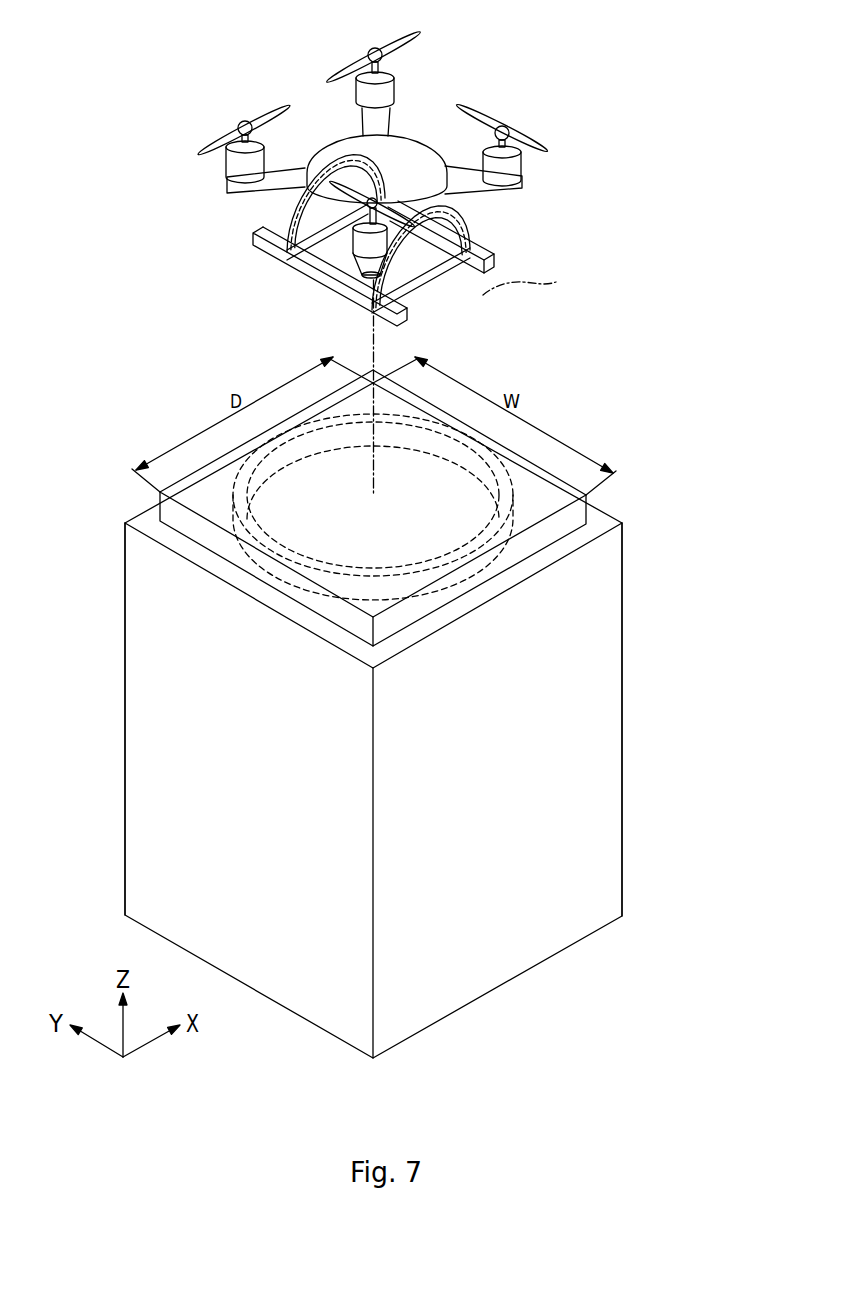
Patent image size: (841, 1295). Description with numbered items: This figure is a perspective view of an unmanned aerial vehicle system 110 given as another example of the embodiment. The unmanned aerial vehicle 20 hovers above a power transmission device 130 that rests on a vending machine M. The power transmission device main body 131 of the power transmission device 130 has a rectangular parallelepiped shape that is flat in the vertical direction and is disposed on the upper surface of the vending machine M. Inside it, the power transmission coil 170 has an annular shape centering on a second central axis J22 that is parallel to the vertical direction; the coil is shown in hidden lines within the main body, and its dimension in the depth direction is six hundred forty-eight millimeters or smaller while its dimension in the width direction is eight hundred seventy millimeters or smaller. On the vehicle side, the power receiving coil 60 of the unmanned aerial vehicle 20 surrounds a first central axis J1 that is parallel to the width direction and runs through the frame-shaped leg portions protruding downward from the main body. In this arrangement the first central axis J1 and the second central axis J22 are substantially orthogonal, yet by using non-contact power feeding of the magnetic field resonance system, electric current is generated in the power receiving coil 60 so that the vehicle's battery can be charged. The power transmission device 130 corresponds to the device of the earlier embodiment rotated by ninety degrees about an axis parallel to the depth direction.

The unmanned aerial vehicle 20 is at (372, 172).
The power receiving coil 60 is at (288, 211).
The unmanned aerial vehicle system 110 is at (644, 82).
The power transmission device 130 is at (594, 494).
The power transmission device main body 131 is at (177, 515).
The power transmission coil 170 is at (513, 497).
The vending machine M is at (560, 730).
The first central axis J1 is at (531, 282).
The second central axis J22 is at (371, 333).